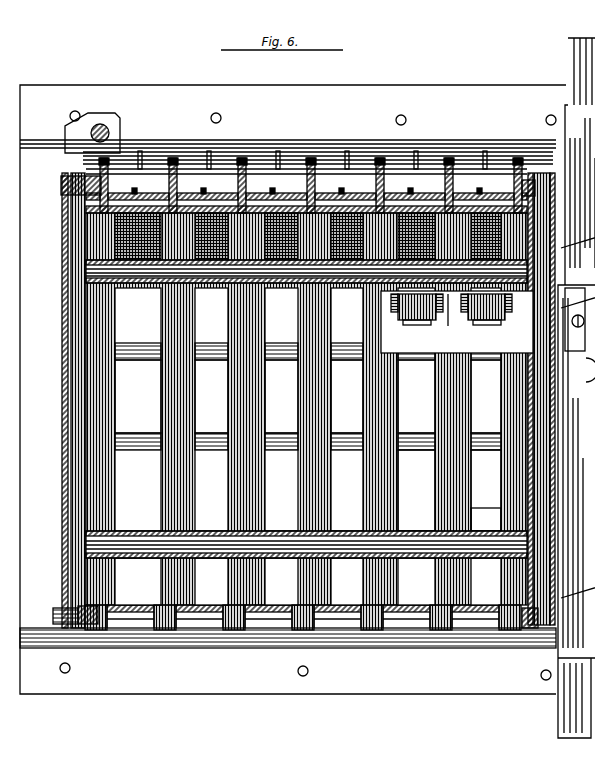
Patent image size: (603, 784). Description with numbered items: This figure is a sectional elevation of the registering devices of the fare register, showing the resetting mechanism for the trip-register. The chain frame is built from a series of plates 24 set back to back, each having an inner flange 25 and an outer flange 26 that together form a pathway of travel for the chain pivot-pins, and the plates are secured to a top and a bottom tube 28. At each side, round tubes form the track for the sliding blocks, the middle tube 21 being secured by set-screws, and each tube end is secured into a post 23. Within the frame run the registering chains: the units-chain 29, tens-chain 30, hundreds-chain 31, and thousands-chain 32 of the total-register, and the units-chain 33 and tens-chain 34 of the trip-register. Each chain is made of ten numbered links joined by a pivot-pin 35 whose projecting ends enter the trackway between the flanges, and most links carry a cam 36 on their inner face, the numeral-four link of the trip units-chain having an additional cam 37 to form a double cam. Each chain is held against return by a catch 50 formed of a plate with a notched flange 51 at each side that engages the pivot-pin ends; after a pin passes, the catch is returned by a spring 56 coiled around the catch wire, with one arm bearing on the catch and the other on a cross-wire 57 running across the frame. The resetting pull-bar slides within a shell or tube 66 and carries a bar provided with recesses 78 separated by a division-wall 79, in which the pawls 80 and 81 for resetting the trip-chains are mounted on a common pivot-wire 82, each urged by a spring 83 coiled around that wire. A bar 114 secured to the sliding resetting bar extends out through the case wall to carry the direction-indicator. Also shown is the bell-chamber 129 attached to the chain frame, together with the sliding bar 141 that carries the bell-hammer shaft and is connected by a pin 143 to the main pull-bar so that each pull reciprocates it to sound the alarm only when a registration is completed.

The middle tube 21 is at (56, 356).
The post 23 is at (45, 605).
The plate 24 is at (88, 624).
The inner flange 25 is at (540, 180).
The outer flange 26 is at (103, 612).
The top and bottom tube 28 is at (306, 409).
The units-chain 29 is at (347, 396).
The tens-chain 30 is at (281, 396).
The hundreds-chain 31 is at (211, 396).
The thousands-chain 32 is at (138, 396).
The units-chain of the trip-register 33 is at (486, 490).
The tens-chain of the trip-register 34 is at (416, 490).
The pivot-pin 35 is at (186, 150).
The cam 36 is at (308, 409).
The additional cam 37 is at (486, 519).
The catch 50 is at (128, 180).
The flange 51 is at (165, 150).
The spring 56 is at (118, 185).
The cross-wire 57 is at (200, 143).
The shell or tube 66 is at (576, 388).
The recess 78 is at (408, 312).
The division-wall 79 is at (383, 304).
The pawl 80 is at (486, 396).
The pawl 81 is at (416, 396).
The pivot-wire 82 is at (441, 316).
The spring 83 is at (420, 316).
The bar 114 is at (572, 480).
The bell-chamber 129 is at (291, 400).
The sliding bar 141 is at (78, 136).
The pin 143 is at (92, 116).